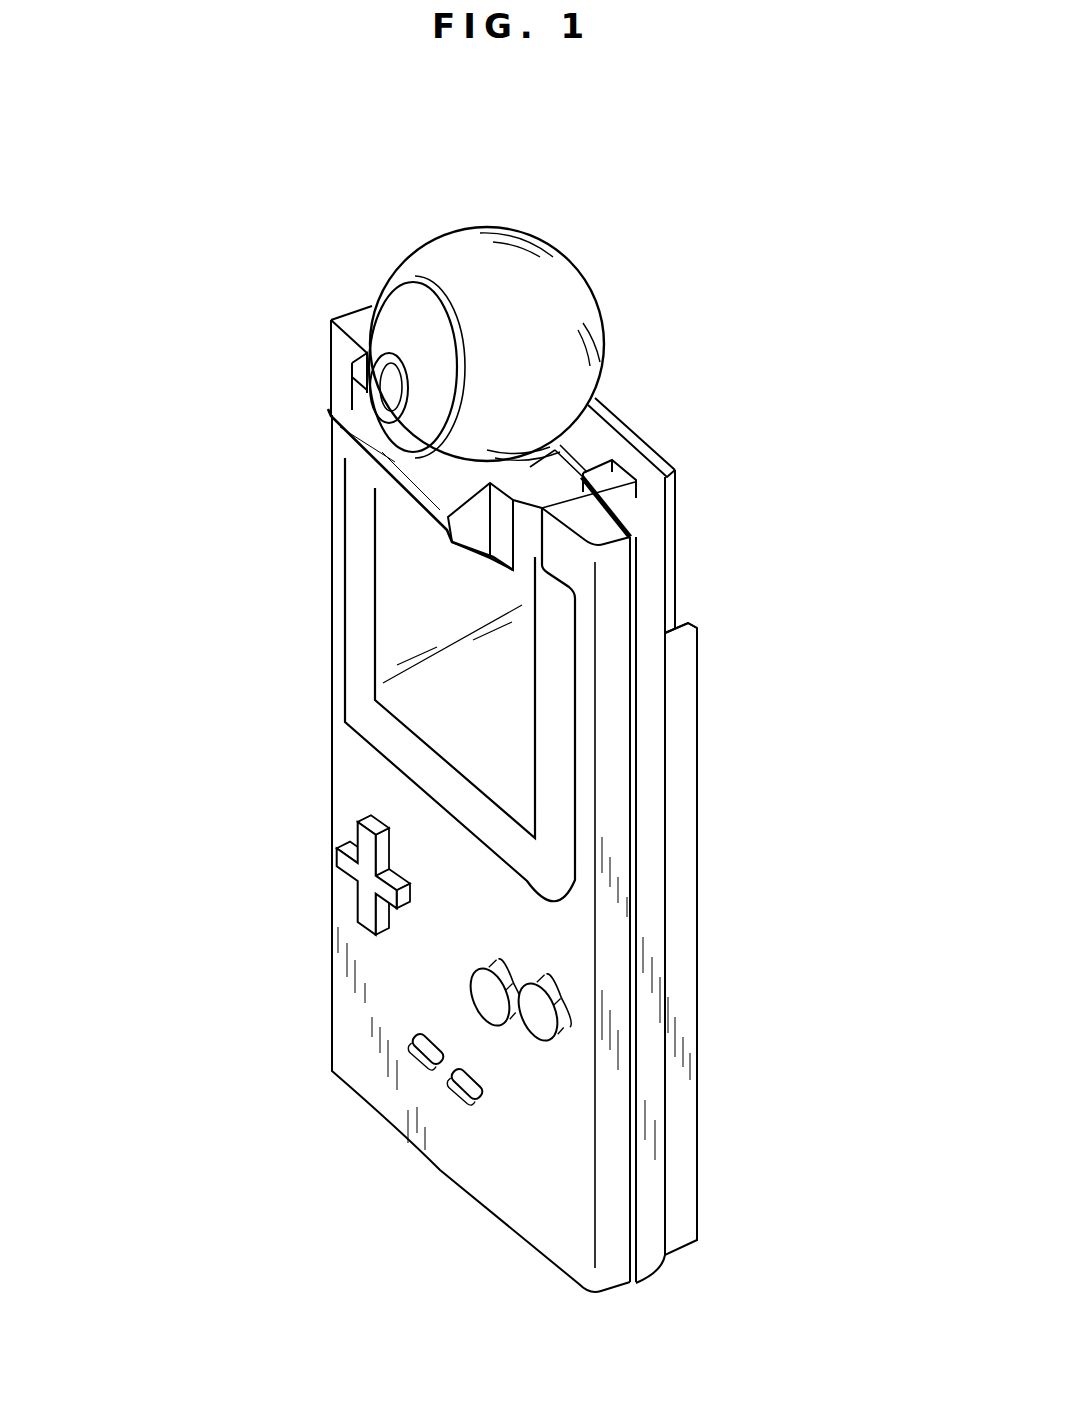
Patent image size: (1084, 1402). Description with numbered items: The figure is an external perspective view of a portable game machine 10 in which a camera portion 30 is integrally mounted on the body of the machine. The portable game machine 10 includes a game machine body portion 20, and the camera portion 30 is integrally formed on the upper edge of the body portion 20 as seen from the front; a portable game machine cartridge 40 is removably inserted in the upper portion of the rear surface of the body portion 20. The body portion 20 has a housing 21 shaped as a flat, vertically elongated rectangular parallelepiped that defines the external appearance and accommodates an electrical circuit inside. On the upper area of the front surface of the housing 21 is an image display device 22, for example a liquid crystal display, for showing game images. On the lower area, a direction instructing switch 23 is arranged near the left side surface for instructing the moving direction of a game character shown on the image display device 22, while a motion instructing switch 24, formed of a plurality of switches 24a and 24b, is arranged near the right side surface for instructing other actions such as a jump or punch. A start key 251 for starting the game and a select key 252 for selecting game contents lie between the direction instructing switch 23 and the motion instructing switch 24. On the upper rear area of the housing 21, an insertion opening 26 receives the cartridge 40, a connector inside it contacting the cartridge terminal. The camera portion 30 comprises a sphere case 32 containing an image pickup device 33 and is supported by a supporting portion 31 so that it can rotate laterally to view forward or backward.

The portable game machine 10 is at (263, 190).
The game machine body portion 20 is at (312, 706).
The housing 21 is at (605, 747).
The image display device 22 is at (500, 758).
The direction instructing switch 23 is at (360, 877).
The motion instructing switch 24 is at (850, 946).
The switch 24a is at (490, 992).
The switch 24b is at (538, 1012).
The start key 251 is at (423, 1057).
The select key 252 is at (463, 1090).
The insertion opening 26 is at (686, 625).
The camera portion 30 is at (386, 252).
The supporting portion 31 is at (590, 457).
The sphere case 32 is at (555, 287).
The image pickup device 33 is at (385, 390).
The portable game machine cartridge 40 is at (672, 446).